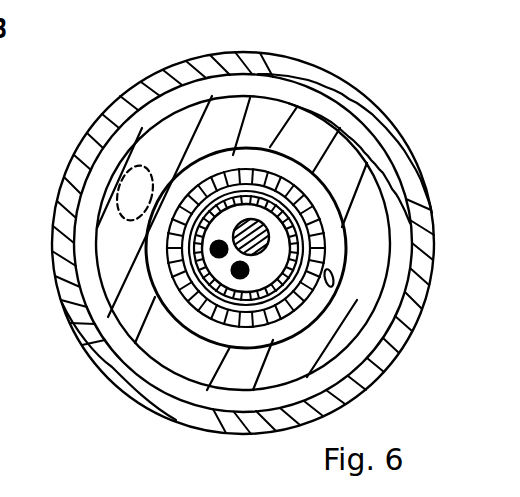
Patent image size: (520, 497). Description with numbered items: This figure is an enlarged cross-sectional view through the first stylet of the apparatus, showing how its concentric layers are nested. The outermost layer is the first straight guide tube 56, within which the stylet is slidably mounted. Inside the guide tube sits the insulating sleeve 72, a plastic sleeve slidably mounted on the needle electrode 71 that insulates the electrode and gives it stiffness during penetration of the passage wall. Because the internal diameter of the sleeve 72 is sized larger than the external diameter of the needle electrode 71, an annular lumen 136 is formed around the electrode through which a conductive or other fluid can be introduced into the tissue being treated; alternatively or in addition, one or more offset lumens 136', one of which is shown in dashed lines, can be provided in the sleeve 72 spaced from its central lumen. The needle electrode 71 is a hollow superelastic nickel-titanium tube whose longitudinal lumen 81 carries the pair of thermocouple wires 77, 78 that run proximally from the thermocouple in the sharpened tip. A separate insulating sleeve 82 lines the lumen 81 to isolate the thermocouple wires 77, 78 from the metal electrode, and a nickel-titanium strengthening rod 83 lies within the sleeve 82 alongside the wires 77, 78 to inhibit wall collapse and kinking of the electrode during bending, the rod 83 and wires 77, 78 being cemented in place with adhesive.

The first straight guide tube 56 is at (374, 102).
The longitudinal lumen 81 is at (337, 408).
The sleeve 72 is at (376, 173).
The needle electrode 71 is at (323, 237).
The insulating sleeve 82 is at (292, 291).
The nickel-titanium rod 83 is at (244, 219).
The thermocouple wire 77 is at (214, 251).
The thermocouple wire 78 is at (236, 274).
The lumen 136 is at (413, 289).
The lumen 136' is at (82, 193).